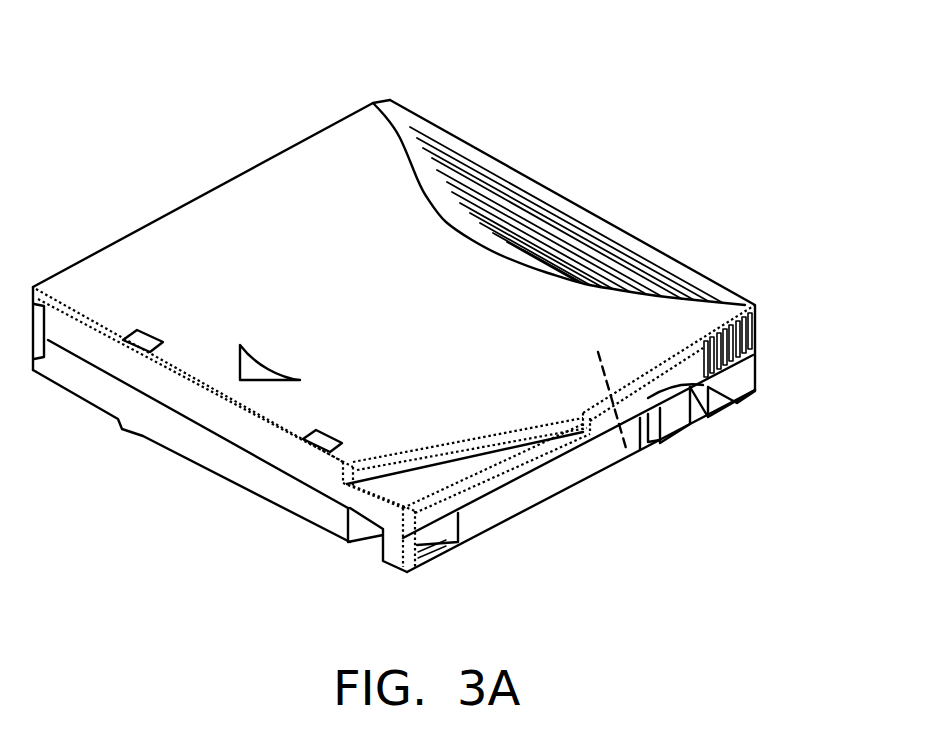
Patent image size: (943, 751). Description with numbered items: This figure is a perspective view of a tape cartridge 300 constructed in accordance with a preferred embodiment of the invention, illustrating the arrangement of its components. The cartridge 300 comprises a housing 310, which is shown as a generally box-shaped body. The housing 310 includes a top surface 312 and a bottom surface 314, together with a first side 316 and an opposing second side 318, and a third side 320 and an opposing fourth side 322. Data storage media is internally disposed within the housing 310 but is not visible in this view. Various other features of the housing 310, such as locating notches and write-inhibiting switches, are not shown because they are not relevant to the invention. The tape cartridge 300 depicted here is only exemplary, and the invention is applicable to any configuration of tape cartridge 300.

The tape cartridge 300 is at (686, 161).
The housing 310 is at (630, 233).
The top surface 312 is at (353, 177).
The bottom surface 314 is at (633, 454).
The first side 316 is at (212, 410).
The second side 318 is at (710, 277).
The third side 320 is at (201, 199).
The fourth side 322 is at (737, 398).